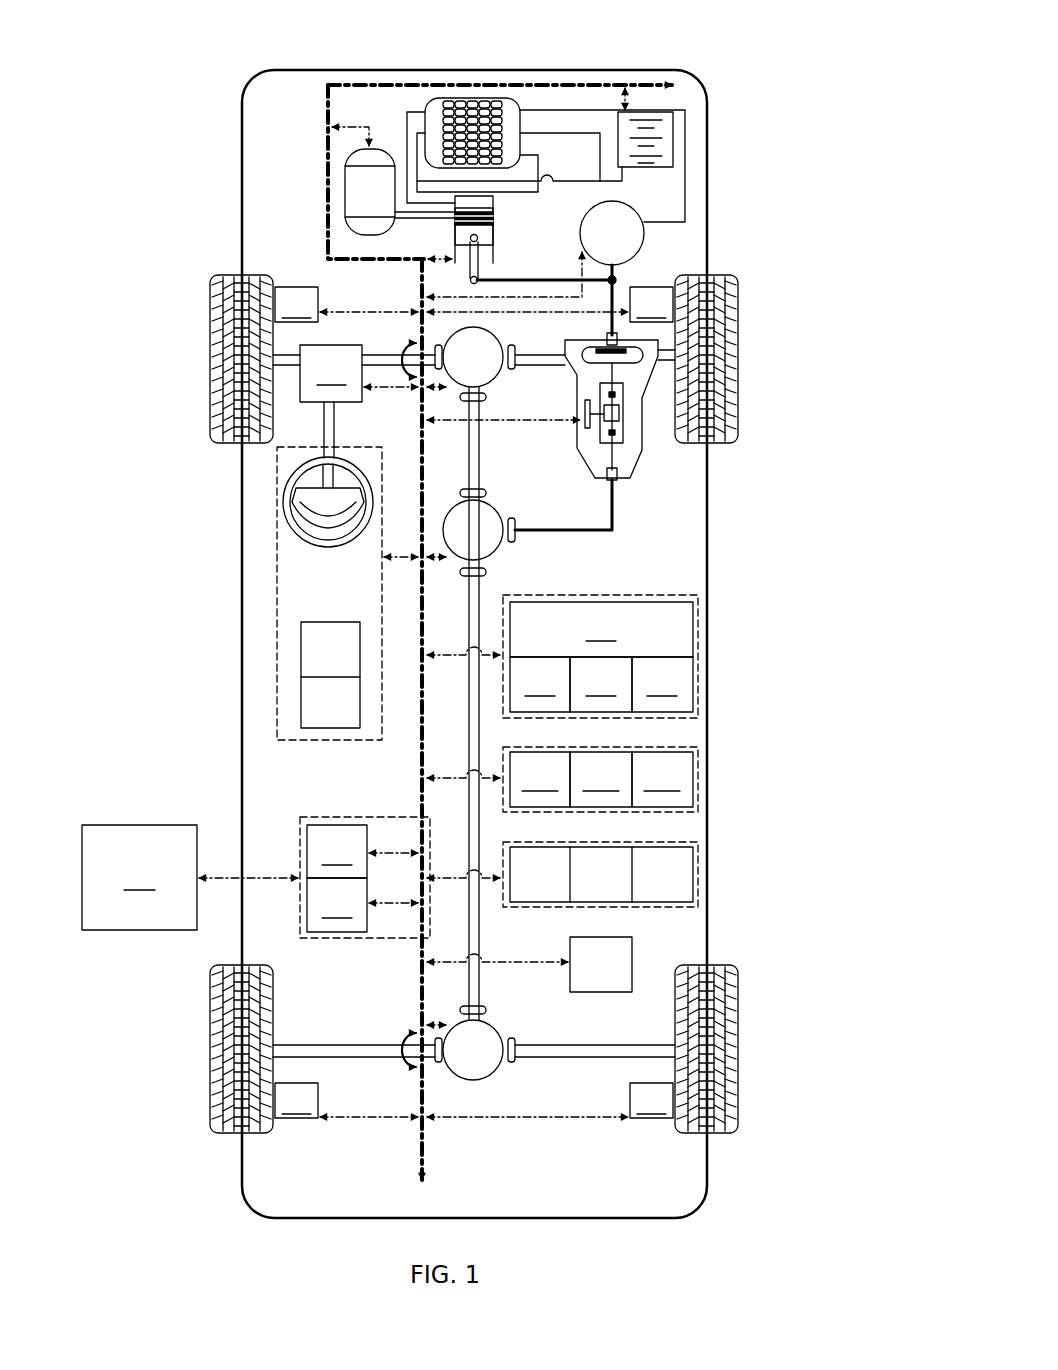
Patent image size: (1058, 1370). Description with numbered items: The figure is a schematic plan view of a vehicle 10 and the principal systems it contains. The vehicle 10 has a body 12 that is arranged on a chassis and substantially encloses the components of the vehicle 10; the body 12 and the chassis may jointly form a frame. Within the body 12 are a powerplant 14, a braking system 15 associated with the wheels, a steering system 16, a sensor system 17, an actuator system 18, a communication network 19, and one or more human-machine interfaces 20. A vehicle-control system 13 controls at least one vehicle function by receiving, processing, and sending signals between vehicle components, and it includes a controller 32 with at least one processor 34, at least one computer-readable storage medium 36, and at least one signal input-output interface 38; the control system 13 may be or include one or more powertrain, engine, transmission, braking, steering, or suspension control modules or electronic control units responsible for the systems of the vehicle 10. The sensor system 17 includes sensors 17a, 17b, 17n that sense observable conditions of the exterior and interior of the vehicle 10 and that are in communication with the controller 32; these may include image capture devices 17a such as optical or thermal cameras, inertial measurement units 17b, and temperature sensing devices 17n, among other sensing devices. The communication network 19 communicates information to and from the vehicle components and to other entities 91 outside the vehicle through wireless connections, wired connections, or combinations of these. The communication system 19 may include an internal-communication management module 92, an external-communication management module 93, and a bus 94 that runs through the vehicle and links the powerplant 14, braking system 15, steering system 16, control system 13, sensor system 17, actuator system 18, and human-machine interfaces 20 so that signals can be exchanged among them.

The vehicle 10 is at (758, 56).
The body 12 is at (272, 70).
The vehicle-control system 13 is at (623, 656).
The powerplant 14 is at (322, 178).
The braking system 15 is at (474, 702).
The steering system 16 is at (359, 401).
The sensor system 17 is at (623, 779).
The image capture device 17a is at (540, 779).
The inertial measurement unit 17b is at (601, 779).
The temperature sensing device 17n is at (700, 790).
The actuator system 18 is at (700, 885).
The communication network 19 is at (288, 857).
The human-machine interface 20 is at (277, 618).
The controller 32 is at (601, 629).
The processor 34 is at (540, 684).
The computer-readable storage medium 36 is at (601, 684).
The signal input-output interface 38 is at (700, 660).
The other entities 91 is at (190, 877).
The internal-communication management module 92 is at (362, 851).
The external-communication management module 93 is at (362, 905).
The bus 94 is at (418, 768).